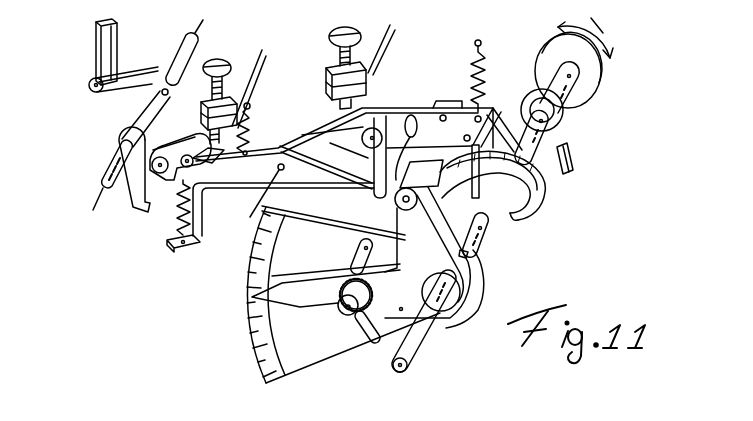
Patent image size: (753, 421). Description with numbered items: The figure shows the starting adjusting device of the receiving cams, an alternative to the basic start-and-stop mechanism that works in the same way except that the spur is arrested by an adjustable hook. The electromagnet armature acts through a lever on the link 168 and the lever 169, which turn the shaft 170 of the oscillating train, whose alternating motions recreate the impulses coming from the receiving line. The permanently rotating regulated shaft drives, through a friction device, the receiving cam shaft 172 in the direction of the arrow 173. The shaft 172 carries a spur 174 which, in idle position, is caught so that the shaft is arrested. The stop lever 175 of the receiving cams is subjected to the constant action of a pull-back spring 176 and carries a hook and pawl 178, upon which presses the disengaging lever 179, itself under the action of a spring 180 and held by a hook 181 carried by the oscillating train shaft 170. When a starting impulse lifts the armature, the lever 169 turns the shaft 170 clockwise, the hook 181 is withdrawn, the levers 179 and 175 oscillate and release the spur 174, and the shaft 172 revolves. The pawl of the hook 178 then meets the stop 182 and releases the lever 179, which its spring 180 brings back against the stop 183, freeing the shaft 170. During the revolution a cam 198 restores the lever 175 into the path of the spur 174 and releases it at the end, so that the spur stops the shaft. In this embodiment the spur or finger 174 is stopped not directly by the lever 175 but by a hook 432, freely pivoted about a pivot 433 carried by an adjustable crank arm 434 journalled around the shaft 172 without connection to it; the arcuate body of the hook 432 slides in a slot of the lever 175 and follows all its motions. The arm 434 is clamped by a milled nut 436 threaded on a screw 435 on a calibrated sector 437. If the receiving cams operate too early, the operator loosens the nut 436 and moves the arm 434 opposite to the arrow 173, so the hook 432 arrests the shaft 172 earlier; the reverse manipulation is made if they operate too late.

The link 168 is at (101, 41).
The lever 169 is at (118, 96).
The shaft of the oscillating train 170 is at (188, 45).
The receiving cam shaft 172 is at (578, 92).
The arrow 173 is at (605, 34).
The spur 174 is at (505, 225).
The stop lever of the receiving cams 175 is at (573, 172).
The pull-back spring 176 is at (475, 68).
The hook and pawl 178 is at (357, 123).
The disengaging lever 179 is at (247, 184).
The spring 180 is at (248, 128).
The hook 181 is at (128, 200).
The stop 182 is at (331, 49).
The stop 183 is at (218, 92).
The cam 198 is at (563, 117).
The hook 432 is at (548, 210).
The pivot 433 is at (395, 205).
The adjustable crank arm 434 is at (402, 311).
The screw 435 is at (348, 316).
The milled nut 436 is at (337, 293).
The calibrated sector 437 is at (250, 308).